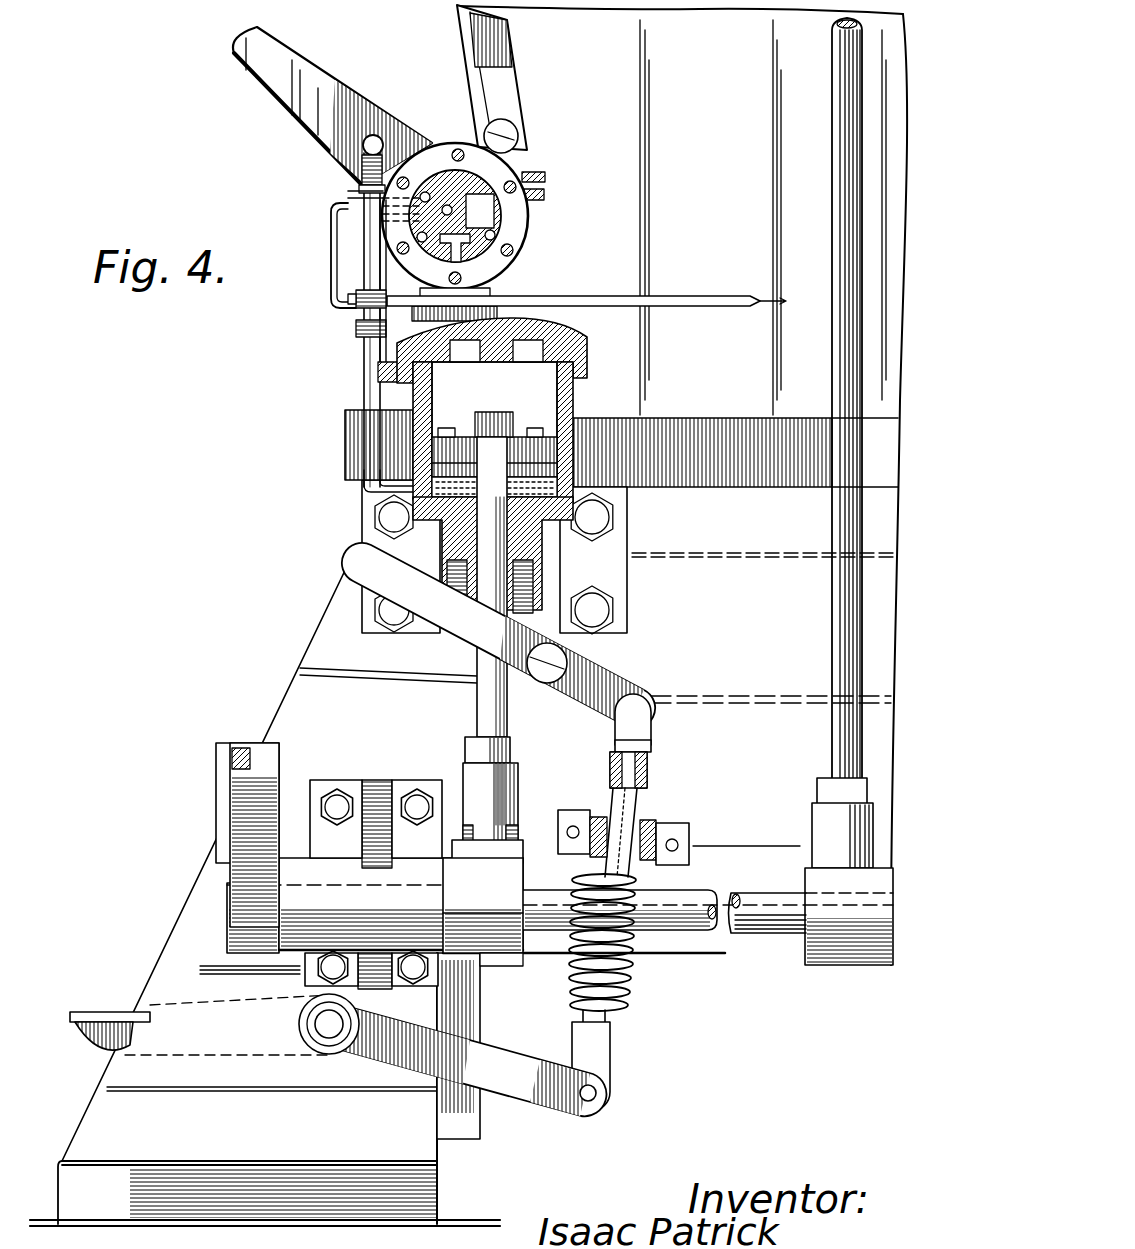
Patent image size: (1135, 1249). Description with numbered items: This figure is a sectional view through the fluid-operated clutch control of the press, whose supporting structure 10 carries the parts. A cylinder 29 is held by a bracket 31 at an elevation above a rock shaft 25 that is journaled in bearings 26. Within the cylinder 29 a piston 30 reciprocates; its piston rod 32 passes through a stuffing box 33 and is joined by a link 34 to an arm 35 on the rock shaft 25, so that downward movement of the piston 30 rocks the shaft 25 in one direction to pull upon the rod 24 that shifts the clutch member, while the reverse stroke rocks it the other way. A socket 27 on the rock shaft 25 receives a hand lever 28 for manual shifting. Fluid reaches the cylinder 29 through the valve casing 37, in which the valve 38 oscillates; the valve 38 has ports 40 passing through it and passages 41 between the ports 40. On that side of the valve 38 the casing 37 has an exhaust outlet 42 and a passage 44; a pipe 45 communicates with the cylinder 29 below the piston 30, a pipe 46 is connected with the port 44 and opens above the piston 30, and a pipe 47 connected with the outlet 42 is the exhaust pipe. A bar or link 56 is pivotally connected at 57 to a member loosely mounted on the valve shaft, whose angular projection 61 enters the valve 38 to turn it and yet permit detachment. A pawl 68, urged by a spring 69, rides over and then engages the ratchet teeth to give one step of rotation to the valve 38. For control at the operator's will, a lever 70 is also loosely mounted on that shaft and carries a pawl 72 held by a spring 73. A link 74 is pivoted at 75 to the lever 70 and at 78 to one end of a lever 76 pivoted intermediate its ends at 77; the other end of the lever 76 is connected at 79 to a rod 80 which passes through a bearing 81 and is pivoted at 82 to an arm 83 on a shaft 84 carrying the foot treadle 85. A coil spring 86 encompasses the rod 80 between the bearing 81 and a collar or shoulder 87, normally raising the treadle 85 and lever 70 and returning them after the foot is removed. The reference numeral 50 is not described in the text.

The supporting structure 10 is at (784, 468).
The rod 24 is at (833, 648).
The rock shaft 25 is at (772, 934).
The bearings 26 is at (376, 792).
The socket 27 is at (230, 828).
The hand lever 28 is at (232, 756).
The cylinder 29 is at (572, 470).
The piston 30 is at (565, 455).
The bracket 31 is at (622, 546).
The piston rod 32 is at (477, 680).
The stuffing box 33 is at (543, 550).
The link 34 is at (520, 828).
The arm 35 is at (500, 964).
The valve casing 37 is at (530, 212).
The valve 38 is at (519, 138).
The ports 40 is at (466, 152).
The passages 41 is at (384, 322).
The exhaust outlet 42 is at (345, 196).
The passage 44 is at (308, 291).
The pipe 45 is at (335, 248).
The pipe 46 is at (378, 343).
The exhaust pipe 47 is at (360, 254).
The pipe union 50 is at (350, 298).
The bar or link 56 is at (492, 18).
The pivot 57 is at (518, 128).
The angular projection 61 is at (428, 192).
The pawl 68 is at (546, 192).
The spring 69 is at (540, 172).
The lever 70 is at (293, 100).
The pawl 72 is at (361, 158).
The spring 73 is at (358, 187).
The link 74 is at (352, 437).
The pivot 75 is at (375, 135).
The lever 76 is at (452, 622).
The pivot 77 is at (547, 684).
The pivot 78 is at (352, 563).
The pivot 79 is at (652, 708).
The rod 80 is at (644, 810).
The bearing 81 is at (688, 834).
The pivot 82 is at (597, 1093).
The arm 83 is at (520, 1098).
The shaft 84 is at (329, 1038).
The foot treadle 85 is at (104, 1012).
The coil spring 86 is at (630, 978).
The collar or shoulder 87 is at (612, 1012).